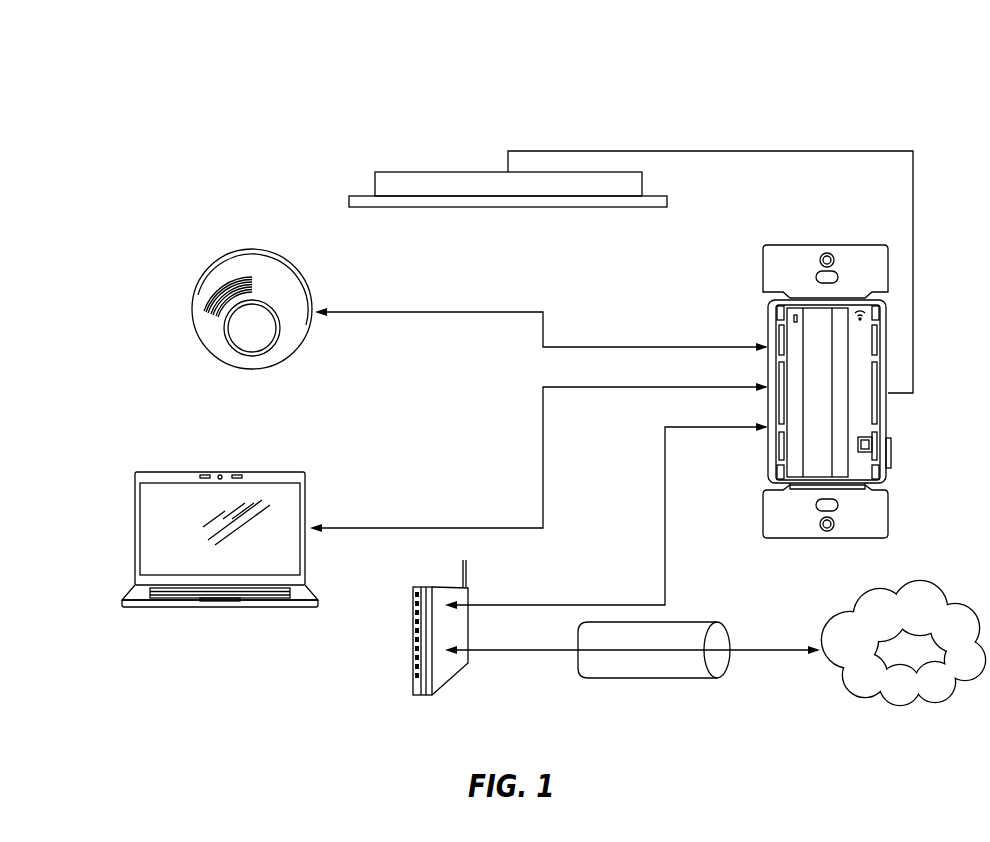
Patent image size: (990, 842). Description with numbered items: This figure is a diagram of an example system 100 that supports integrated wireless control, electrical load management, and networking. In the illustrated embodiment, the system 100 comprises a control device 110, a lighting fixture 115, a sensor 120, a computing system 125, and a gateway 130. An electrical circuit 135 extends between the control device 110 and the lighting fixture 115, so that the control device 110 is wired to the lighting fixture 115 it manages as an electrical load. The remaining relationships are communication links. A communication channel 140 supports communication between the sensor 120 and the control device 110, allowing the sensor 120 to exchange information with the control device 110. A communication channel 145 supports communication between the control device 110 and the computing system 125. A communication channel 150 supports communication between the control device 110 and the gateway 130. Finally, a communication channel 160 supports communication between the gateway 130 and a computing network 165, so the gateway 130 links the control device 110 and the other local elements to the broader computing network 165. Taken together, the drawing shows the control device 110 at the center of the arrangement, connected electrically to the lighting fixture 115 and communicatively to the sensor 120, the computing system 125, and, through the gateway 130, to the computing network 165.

The system 100 is at (142, 56).
The control device 110 is at (781, 245).
The lighting fixture 115 is at (440, 172).
The sensor 120 is at (252, 250).
The computing system 125 is at (150, 472).
The gateway 130 is at (413, 658).
The electrical circuit 135 is at (728, 151).
The communication channel 140 is at (430, 312).
The communication channel 145 is at (543, 465).
The communication channel 150 is at (665, 523).
The communication channel 160 is at (650, 678).
The computing network 165 is at (921, 652).